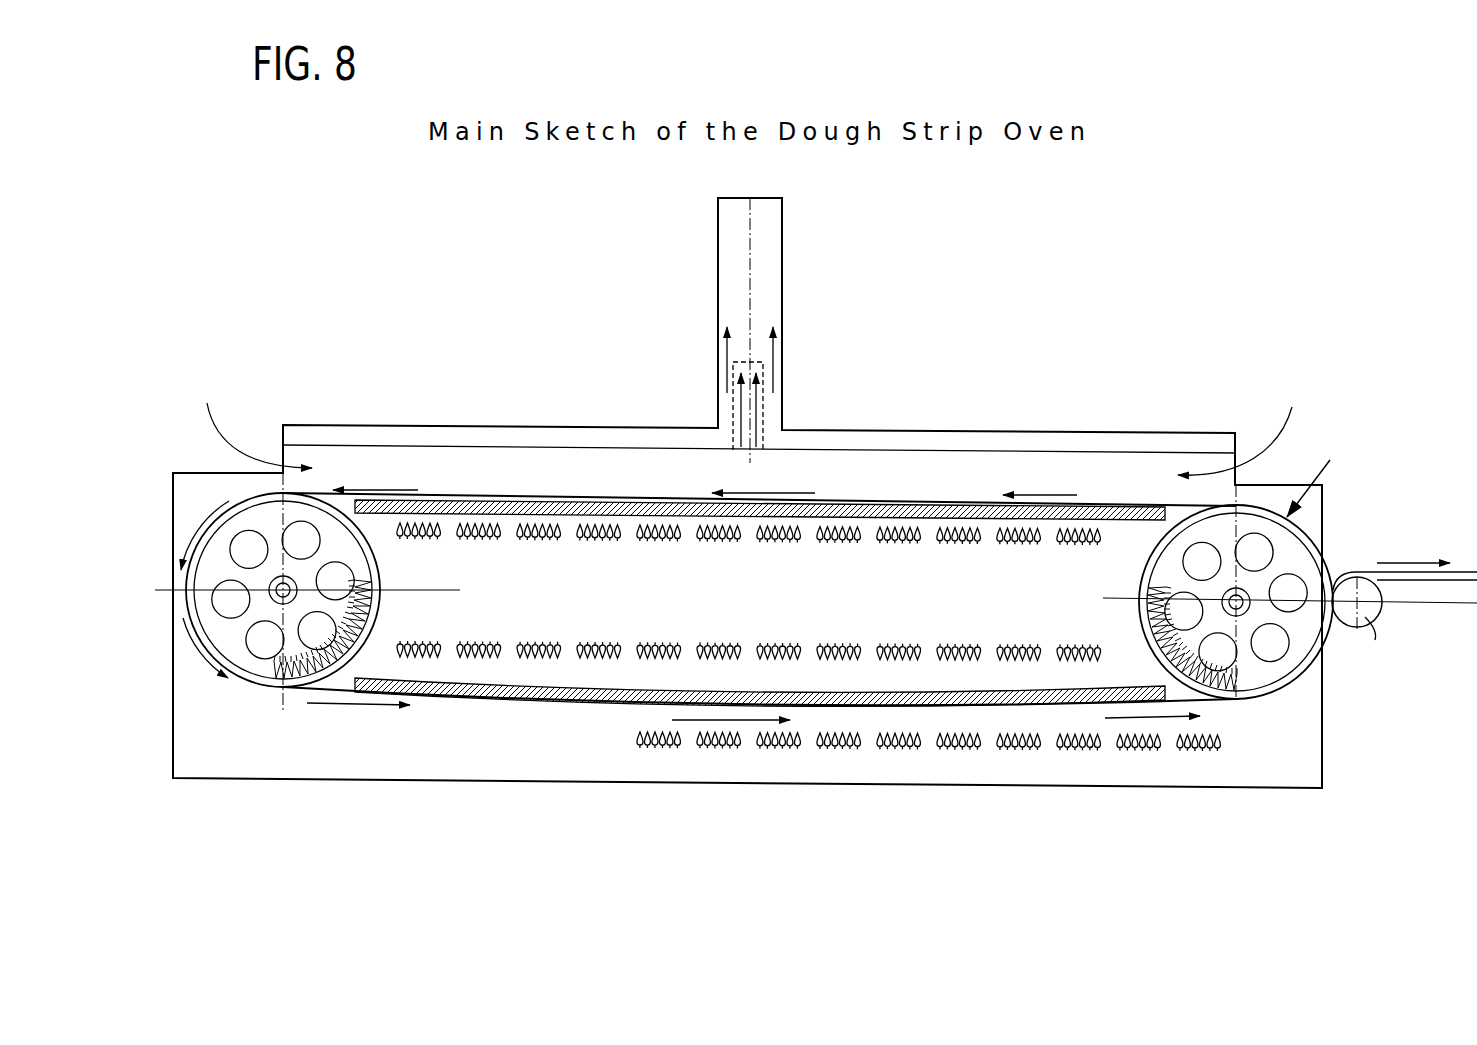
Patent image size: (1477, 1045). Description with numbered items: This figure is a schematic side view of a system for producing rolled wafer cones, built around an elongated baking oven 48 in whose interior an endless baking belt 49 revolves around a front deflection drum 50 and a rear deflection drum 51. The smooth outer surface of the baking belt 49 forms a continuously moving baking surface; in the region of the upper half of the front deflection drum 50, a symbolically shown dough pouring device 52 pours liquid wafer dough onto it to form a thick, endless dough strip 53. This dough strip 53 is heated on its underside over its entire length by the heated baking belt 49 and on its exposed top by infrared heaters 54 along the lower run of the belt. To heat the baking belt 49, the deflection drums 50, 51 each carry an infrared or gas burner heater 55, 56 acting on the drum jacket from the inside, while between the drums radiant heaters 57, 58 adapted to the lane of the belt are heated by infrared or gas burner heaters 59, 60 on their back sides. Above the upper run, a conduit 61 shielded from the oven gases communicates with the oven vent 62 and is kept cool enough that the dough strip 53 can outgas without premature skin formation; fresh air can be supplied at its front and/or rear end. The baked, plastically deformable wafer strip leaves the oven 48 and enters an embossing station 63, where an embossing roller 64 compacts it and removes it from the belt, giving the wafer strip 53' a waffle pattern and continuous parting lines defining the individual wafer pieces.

The baking oven 48 is at (463, 397).
The endless baking belt 49 is at (1312, 530).
The front deflection drum 50 is at (1273, 683).
The rear deflection drum 51 is at (262, 685).
The dough pouring device 52 is at (1335, 471).
The dough strip 53 is at (753, 565).
The baked wafer strip 53' is at (1405, 557).
The infrared heaters 54 is at (732, 748).
The infrared or gas burner heater 55 is at (1142, 608).
The infrared or gas burner heater 56 is at (378, 613).
The radiant heater 57 is at (558, 703).
The radiant heater 58 is at (625, 503).
The infrared or gas burner heater 59 is at (902, 640).
The infrared or gas burner heater 60 is at (613, 542).
The conduit 61 is at (913, 466).
The oven vent 62 is at (783, 216).
The embossing station 63 is at (1347, 673).
The embossing roller 64 is at (1375, 665).